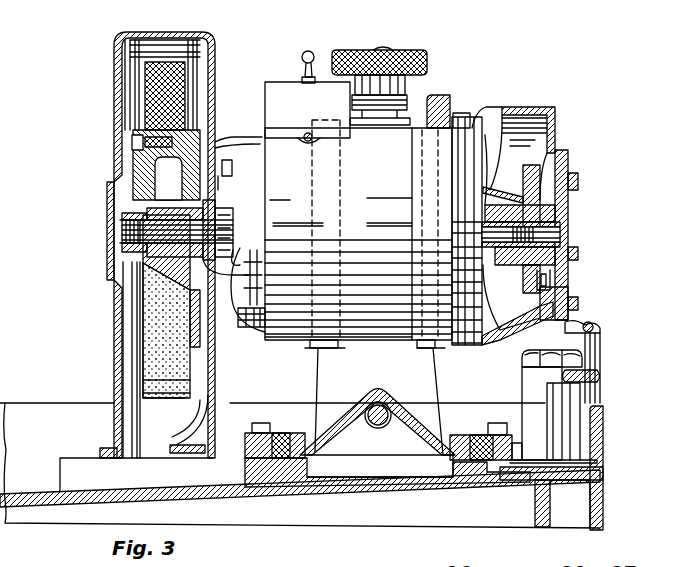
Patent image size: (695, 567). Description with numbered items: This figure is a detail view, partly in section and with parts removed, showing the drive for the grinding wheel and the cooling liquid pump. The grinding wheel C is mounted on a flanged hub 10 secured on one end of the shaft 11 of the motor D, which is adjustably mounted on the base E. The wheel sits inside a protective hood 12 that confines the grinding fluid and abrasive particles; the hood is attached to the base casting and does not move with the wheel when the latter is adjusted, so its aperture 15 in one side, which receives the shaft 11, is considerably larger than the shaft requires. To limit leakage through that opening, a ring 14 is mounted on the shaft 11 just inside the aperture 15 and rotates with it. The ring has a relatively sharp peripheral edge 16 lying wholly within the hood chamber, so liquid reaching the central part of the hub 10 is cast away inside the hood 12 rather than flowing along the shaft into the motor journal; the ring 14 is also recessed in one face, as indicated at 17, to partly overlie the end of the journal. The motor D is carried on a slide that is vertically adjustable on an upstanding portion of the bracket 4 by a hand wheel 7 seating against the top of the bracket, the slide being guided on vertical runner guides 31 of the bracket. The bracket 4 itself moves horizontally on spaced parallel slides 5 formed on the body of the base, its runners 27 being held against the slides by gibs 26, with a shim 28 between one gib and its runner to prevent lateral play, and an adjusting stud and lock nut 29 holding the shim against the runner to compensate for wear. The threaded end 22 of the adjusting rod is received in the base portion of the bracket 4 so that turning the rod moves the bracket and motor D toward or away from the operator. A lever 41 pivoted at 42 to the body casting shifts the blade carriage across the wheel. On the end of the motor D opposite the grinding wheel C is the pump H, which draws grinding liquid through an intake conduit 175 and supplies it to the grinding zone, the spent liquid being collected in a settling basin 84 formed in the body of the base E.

The protective hood 12 is at (114, 58).
The flanged hub 10 is at (200, 128).
The aperture 15 is at (218, 148).
The shaft 11 is at (120, 216).
The ring 14 is at (215, 205).
The recess 17 is at (228, 216).
The peripheral edge 16 is at (233, 272).
The vertical runner guides 31 is at (312, 202).
The hand wheel 7 is at (428, 54).
The bracket 4 is at (376, 368).
The runners 27 is at (297, 433).
The threaded end 22 is at (378, 424).
The gibs 26 is at (243, 433).
The slides 5 is at (280, 433).
The shim 28 is at (486, 478).
The adjusting stud and lock nut 29 is at (513, 445).
The lever 41 is at (600, 375).
The pivot 42 is at (549, 356).
The intake conduit 175 is at (600, 336).
The settling basin 84 is at (26, 496).
The motor D is at (357, 211).
The pump H is at (572, 207).
The base E is at (603, 448).
The grinding wheel C is at (180, 403).